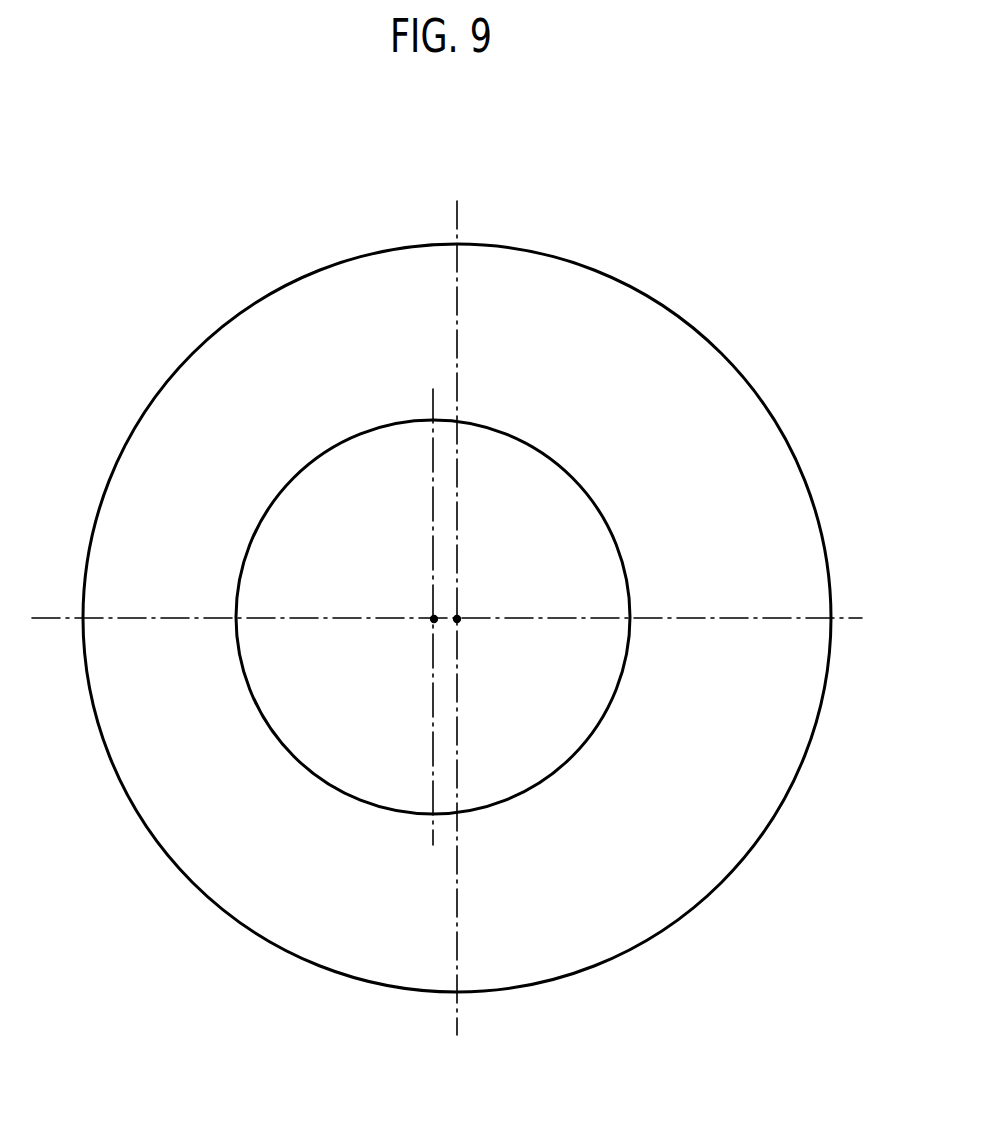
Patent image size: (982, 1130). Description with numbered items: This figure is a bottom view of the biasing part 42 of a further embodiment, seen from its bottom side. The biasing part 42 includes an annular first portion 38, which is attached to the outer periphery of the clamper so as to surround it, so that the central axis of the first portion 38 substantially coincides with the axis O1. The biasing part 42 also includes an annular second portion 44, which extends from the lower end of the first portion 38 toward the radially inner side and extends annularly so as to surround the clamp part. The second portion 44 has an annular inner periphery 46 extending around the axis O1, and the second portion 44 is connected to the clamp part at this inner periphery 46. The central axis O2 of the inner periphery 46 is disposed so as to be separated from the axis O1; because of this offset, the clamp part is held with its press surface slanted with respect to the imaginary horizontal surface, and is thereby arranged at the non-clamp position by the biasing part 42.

The biasing part 42 is at (794, 180).
The first portion 38 is at (735, 365).
The second portion 44 is at (670, 893).
The inner periphery 46 is at (270, 500).
The axis O1 is at (457, 619).
The central axis of the inner periphery O2 is at (434, 619).